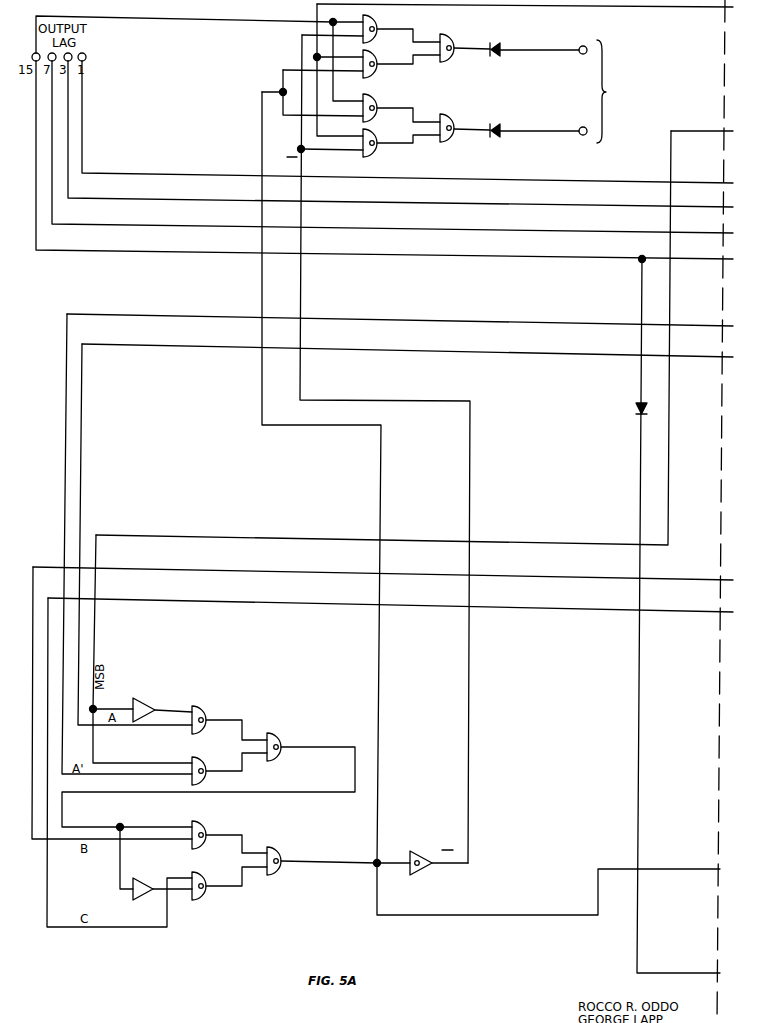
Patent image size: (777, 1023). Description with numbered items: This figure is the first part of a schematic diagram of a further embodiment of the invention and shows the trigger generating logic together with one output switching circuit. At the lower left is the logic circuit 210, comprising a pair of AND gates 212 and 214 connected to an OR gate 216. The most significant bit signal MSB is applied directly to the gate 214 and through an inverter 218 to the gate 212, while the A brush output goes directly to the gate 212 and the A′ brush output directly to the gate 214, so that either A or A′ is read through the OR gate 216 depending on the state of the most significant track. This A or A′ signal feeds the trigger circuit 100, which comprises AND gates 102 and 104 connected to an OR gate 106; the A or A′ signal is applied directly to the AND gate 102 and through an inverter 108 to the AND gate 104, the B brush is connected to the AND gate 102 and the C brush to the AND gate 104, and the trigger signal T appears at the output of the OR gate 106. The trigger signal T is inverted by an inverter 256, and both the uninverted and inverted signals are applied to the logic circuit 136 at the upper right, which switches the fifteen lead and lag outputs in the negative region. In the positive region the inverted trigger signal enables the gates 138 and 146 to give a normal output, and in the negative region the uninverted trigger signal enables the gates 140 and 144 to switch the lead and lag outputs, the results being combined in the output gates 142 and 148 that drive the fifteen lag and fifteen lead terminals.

The trigger circuit 100 is at (250, 905).
The AND gate 102 is at (207, 822).
The AND gate 104 is at (204, 898).
The OR gate 106 is at (280, 848).
The inverter 108 is at (143, 878).
The logic circuit 136 is at (427, 145).
The gate 138 is at (377, 18).
The gate 140 is at (376, 77).
The OR gate 142 is at (453, 62).
The gate 144 is at (377, 97).
The gate 146 is at (376, 152).
The OR gate 148 is at (454, 118).
The logic circuit 210 is at (282, 759).
The AND gate 212 is at (205, 707).
The AND gate 214 is at (211, 746).
The OR gate 216 is at (278, 733).
The inverter 218 is at (141, 697).
The inverter 256 is at (420, 875).